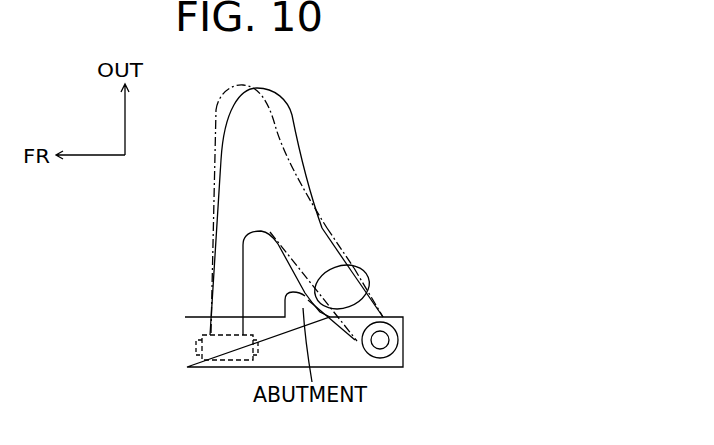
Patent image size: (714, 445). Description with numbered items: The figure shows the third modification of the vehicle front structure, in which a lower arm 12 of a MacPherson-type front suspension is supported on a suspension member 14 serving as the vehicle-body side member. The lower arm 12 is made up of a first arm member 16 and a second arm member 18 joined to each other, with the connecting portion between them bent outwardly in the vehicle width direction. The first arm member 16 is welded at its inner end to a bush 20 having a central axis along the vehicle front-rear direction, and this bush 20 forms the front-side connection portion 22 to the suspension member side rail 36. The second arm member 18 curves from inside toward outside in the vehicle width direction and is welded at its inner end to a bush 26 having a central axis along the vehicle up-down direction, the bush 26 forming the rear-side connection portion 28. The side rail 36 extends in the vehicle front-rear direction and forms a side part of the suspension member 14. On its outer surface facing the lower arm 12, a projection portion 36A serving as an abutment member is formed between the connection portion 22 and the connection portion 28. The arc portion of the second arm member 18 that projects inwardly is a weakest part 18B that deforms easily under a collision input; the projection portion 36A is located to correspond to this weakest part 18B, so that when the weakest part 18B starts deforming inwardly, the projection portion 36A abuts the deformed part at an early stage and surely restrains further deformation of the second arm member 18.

The lower arm 12 is at (365, 130).
The first arm member 16 is at (222, 215).
The second arm member 18 is at (323, 229).
The weakest part 18B is at (370, 270).
The connection portion 28 is at (393, 305).
The bush 26 is at (398, 340).
The projection portion 36A is at (297, 291).
The bush 20 is at (184, 333).
The connection portion 22 is at (204, 323).
The suspension member side rail 36 is at (185, 353).
The suspension member 14 is at (170, 354).